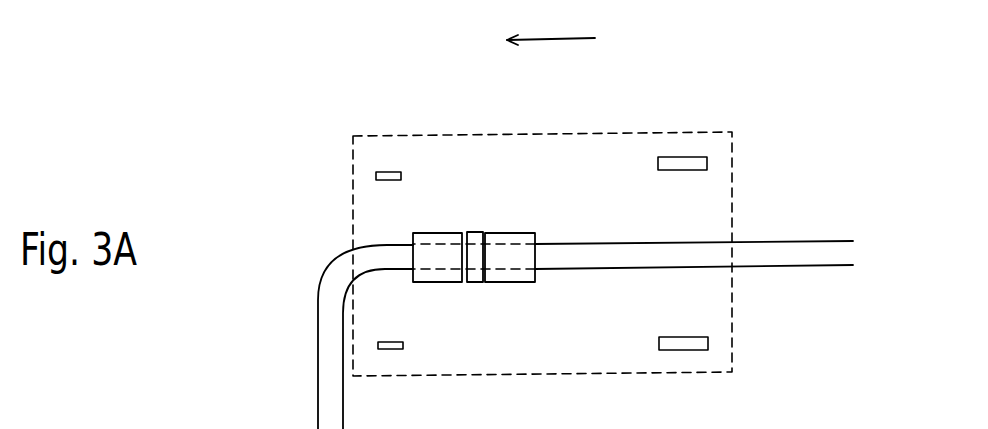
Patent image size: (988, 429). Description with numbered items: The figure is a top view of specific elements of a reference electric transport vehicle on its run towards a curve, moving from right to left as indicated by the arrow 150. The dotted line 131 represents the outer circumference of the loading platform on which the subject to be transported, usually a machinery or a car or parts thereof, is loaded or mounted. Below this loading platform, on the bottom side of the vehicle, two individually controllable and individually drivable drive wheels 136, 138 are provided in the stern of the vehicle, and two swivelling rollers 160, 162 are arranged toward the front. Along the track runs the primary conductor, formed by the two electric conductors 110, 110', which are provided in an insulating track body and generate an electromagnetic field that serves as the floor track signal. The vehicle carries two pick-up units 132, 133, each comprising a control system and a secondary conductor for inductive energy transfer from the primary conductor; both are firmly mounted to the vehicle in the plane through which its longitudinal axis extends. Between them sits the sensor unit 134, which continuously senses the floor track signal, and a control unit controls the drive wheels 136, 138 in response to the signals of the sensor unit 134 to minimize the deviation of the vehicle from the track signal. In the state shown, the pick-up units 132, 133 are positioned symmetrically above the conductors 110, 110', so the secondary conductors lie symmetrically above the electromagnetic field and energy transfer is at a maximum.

The arrow 150 is at (551, 27).
The dotted line 131 is at (625, 133).
The electric conductor 110 is at (609, 303).
The electric conductor 110' is at (622, 347).
The pick-up unit 132 is at (520, 273).
The pick-up unit 133 is at (435, 273).
The sensor unit 134 is at (475, 273).
The swivelling roller 160 is at (388, 176).
The swivelling roller 162 is at (390, 344).
The drive wheel 136 is at (700, 163).
The drive wheel 138 is at (705, 342).